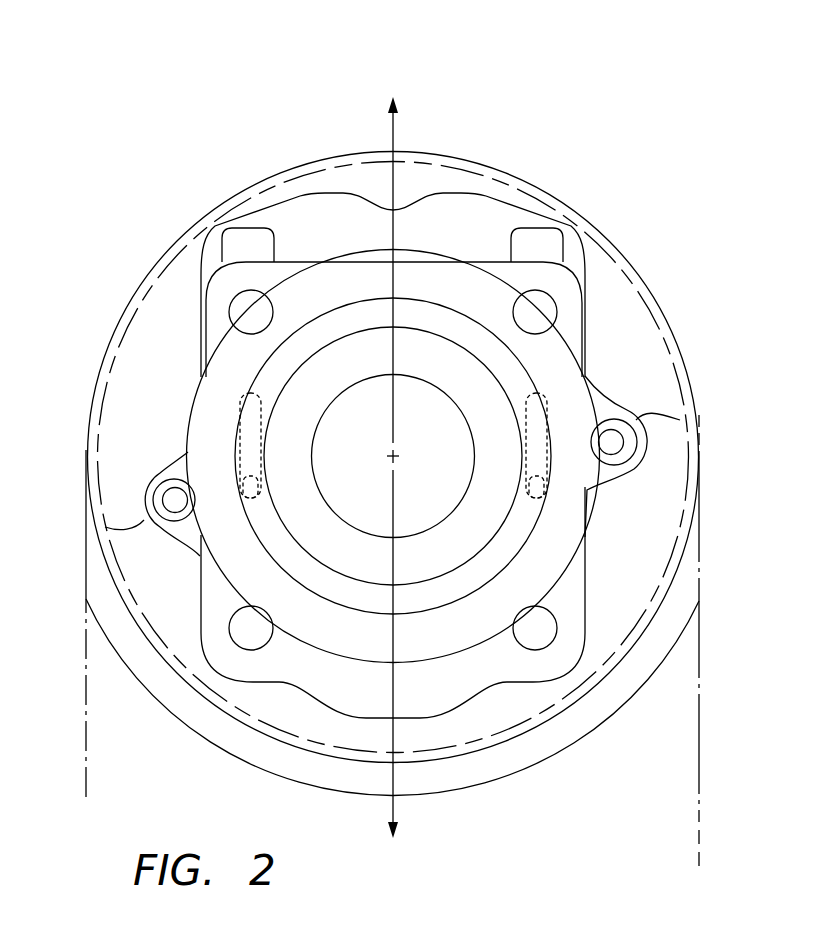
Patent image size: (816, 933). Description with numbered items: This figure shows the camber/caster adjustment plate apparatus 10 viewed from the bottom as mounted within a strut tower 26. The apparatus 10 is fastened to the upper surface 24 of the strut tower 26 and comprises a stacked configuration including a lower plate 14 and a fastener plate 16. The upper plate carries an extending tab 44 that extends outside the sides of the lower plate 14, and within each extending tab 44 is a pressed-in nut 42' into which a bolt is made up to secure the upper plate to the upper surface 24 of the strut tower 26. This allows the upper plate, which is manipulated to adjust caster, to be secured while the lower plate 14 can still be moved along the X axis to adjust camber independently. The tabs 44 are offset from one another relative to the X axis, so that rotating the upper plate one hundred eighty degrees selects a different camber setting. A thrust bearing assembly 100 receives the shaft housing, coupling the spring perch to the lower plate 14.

The camber/caster adjustment plate apparatus 10 is at (497, 202).
The lower plate 14 is at (208, 266).
The fastener plate 16 is at (207, 318).
The upper surface 24 is at (643, 344).
The strut tower 26 is at (699, 768).
The pressed-in nut 42' is at (392, 466).
The extending tab 44 is at (105, 527).
The thrust bearing assembly 100 is at (192, 412).